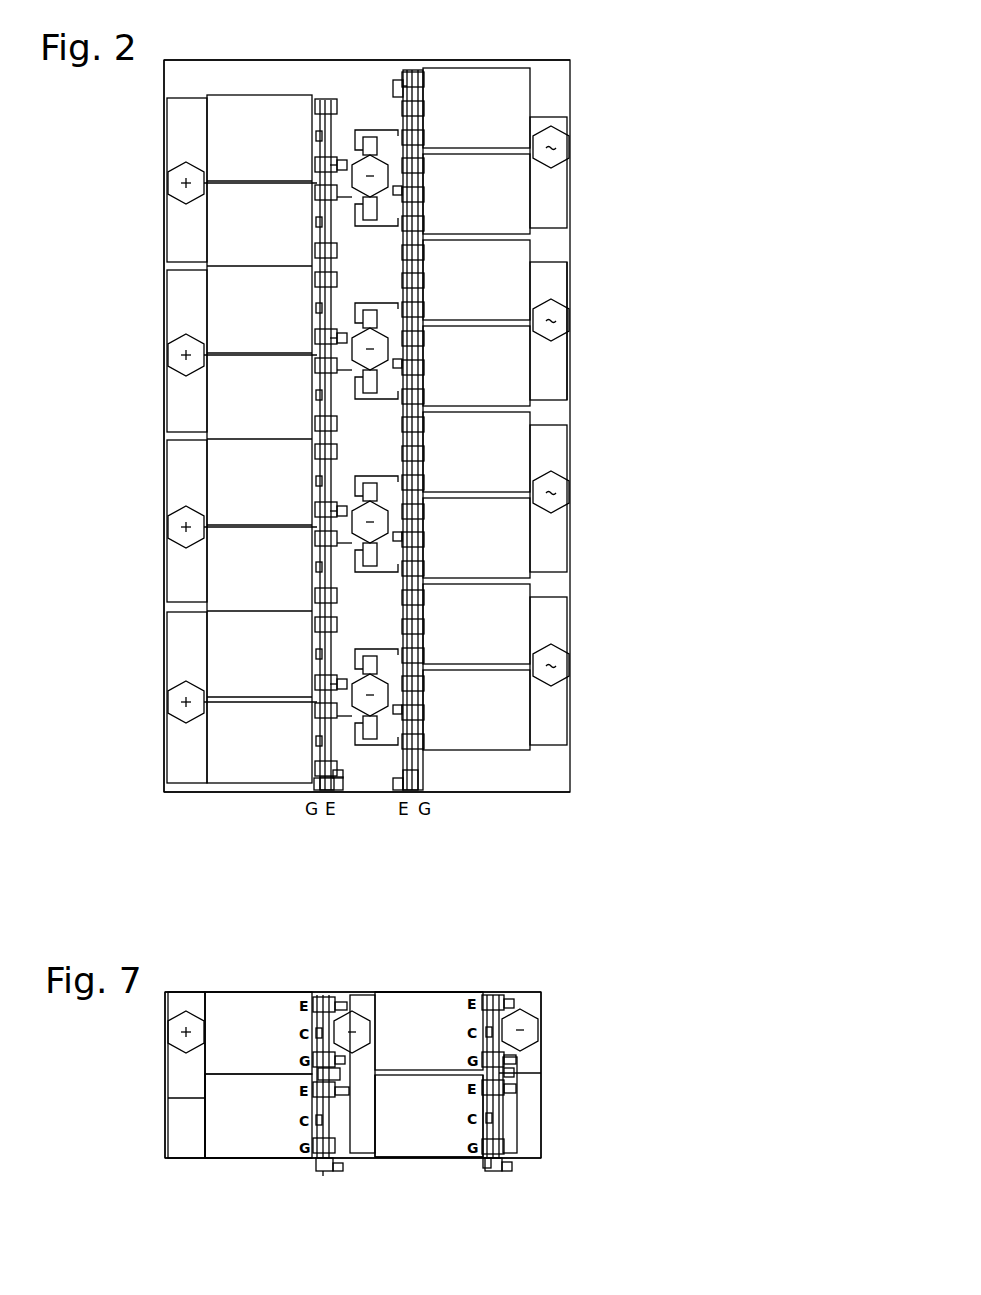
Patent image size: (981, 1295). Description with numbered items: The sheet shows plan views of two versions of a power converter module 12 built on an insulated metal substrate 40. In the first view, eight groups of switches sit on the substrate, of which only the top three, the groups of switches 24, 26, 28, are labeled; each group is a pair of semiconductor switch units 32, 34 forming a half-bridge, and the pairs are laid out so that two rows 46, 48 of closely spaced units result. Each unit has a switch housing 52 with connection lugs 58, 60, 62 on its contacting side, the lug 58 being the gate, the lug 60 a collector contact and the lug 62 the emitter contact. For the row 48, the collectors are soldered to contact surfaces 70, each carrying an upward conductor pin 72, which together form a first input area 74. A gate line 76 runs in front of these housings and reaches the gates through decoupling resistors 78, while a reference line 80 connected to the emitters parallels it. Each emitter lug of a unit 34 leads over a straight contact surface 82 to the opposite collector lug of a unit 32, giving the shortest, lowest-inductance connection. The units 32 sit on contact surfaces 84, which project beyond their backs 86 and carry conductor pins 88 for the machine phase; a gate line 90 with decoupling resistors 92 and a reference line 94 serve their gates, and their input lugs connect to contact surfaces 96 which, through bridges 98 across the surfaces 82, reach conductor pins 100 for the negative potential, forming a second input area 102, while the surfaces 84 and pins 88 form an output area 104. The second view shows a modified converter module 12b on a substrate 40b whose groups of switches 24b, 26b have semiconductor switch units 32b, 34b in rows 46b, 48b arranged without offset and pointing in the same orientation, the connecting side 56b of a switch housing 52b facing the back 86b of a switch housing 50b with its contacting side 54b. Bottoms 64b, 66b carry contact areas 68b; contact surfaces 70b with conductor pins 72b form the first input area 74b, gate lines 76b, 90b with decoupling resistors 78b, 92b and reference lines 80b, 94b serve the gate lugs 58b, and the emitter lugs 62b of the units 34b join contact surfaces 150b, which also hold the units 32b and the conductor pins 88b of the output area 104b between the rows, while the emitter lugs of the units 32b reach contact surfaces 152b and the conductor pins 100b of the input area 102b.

In FIG. 2, the power converter module 12 is at (600, 154).
In FIG. 2, the group of switches 24 is at (136, 160).
In FIG. 2, the group of switches 26 is at (148, 234).
In FIG. 2, the group of switches 28 is at (148, 313).
In FIG. 2, the semiconductor switch unit 32 is at (508, 80).
In FIG. 2, the semiconductor switch unit 34 is at (270, 105).
In FIG. 2, the insulated metal substrate 40 is at (533, 794).
In FIG. 2, the row of semiconductor switch units 46 is at (483, 55).
In FIG. 2, the row of semiconductor switch units 48 is at (216, 52).
In FIG. 2, the switch housing 52 is at (236, 248).
In FIG. 2, the connection lug 58 is at (414, 76).
In FIG. 2, the connection lug 60 is at (298, 138).
In FIG. 2, the connection lug 62 is at (327, 102).
In FIG. 2, the contact surface 70 is at (180, 120).
In FIG. 2, the conductor pin 72 is at (176, 186).
In FIG. 2, the first input area 74 is at (152, 448).
In FIG. 2, the gate line 76 is at (318, 791).
In FIG. 2, the decoupling resistor 78 is at (343, 783).
In FIG. 2, the reference line 80 is at (313, 745).
In FIG. 2, the contact surface 82 is at (425, 272).
In FIG. 2, the contact surface 84 is at (573, 198).
In FIG. 2, the back 86 is at (533, 117).
In FIG. 2, the conductor pin 88 is at (552, 163).
In FIG. 2, the gate line 90 is at (419, 772).
In FIG. 2, the decoupling resistor 92 is at (393, 92).
In FIG. 2, the reference line 94 is at (418, 784).
In FIG. 2, the contact surface 96 is at (362, 658).
In FIG. 2, the bridge 98 is at (302, 690).
In FIG. 2, the conductor pin 100 is at (424, 727).
In FIG. 2, the second input area 102 is at (388, 468).
In FIG. 2, the output area 104 is at (602, 311).
In FIG. 7, the converter module 12b is at (589, 999).
In FIG. 7, the group of switches 24b is at (136, 1048).
In FIG. 7, the group of switches 26b is at (141, 1113).
In FIG. 7, the semiconductor switch unit 32b is at (455, 1150).
In FIG. 7, the semiconductor switch unit 34b is at (263, 1143).
In FIG. 7, the substrate 40b is at (166, 1014).
In FIG. 7, the row of semiconductor switch units 46b is at (438, 976).
In FIG. 7, the row of semiconductor switch units 48b is at (268, 974).
In FIG. 7, the switch housing 50b is at (407, 1140).
In FIG. 7, the switch housing 52b is at (233, 1145).
In FIG. 7, the contacting side 54b is at (504, 1150).
In FIG. 7, the connecting side 56b is at (325, 997).
In FIG. 7, the connection lug 58b is at (517, 1048).
In FIG. 7, the connection lug 62b is at (315, 1000).
In FIG. 7, the bottom 64b is at (437, 1150).
In FIG. 7, the bottom 66b is at (213, 1160).
In FIG. 7, the contact area 68b is at (210, 1115).
In FIG. 7, the contact surface 70b is at (182, 1098).
In FIG. 7, the conductor pin 72b is at (172, 1046).
In FIG. 7, the first input area 74b is at (151, 1140).
In FIG. 7, the gate line 76b is at (320, 1165).
In FIG. 7, the decoupling resistor 78b is at (345, 1167).
In FIG. 7, the reference line 80b is at (330, 1170).
In FIG. 7, the back 86b is at (376, 1010).
In FIG. 7, the conductor pin 88b is at (212, 1118).
In FIG. 7, the gate line 90b is at (500, 1168).
In FIG. 7, the decoupling resistor 92b is at (518, 1074).
In FIG. 7, the reference line 94b is at (511, 1166).
In FIG. 7, the conductor pin 100b is at (540, 1033).
In FIG. 7, the input area 102b is at (566, 1142).
In FIG. 7, the output area 104b is at (353, 974).
In FIG. 7, the contact surface 150b is at (362, 993).
In FIG. 7, the contact surface 152b is at (535, 1116).